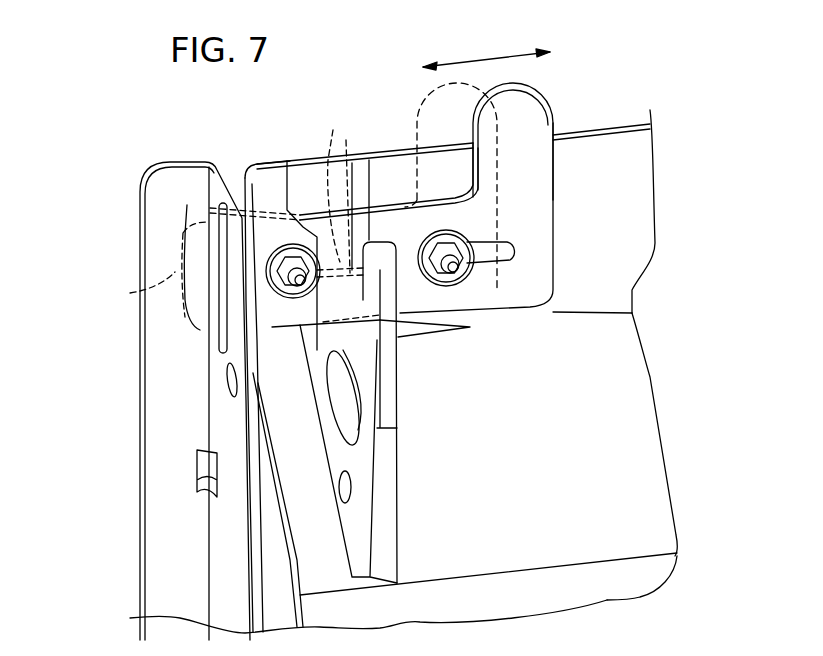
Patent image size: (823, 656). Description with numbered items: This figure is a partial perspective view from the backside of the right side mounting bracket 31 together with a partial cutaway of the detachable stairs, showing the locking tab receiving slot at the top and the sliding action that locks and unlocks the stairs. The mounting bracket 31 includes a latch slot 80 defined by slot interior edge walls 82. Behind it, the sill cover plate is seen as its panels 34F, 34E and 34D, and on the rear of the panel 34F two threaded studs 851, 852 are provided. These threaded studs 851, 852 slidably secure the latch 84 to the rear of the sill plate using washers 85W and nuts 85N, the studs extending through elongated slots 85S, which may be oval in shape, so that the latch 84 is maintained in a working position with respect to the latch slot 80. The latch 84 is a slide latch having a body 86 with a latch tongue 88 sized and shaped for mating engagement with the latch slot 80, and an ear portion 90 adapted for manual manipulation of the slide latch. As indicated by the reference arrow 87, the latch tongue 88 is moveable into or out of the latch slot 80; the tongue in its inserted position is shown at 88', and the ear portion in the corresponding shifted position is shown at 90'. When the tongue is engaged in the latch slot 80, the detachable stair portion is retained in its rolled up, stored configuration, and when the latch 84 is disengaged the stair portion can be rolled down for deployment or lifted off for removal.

The mounting bracket 31 is at (92, 192).
The slot interior edge walls 82 is at (217, 210).
The latch slot 80 is at (235, 298).
The latch tongue 88 is at (185, 295).
The tongue position 88' is at (143, 269).
The body 86 is at (538, 230).
The ear portion 90 is at (544, 135).
The ear portion position 90' is at (423, 184).
The reference arrow 87 is at (477, 62).
The elongated slots 85S is at (332, 140).
The washers 85W is at (503, 195).
The nuts 85N is at (465, 368).
The threaded stud 851 is at (290, 298).
The threaded stud 852 is at (470, 275).
The latch 84 is at (543, 290).
The sill cover plate panel 34F is at (633, 265).
The sill cover plate panel 34E is at (655, 477).
The sill cover plate panel 34D is at (660, 572).